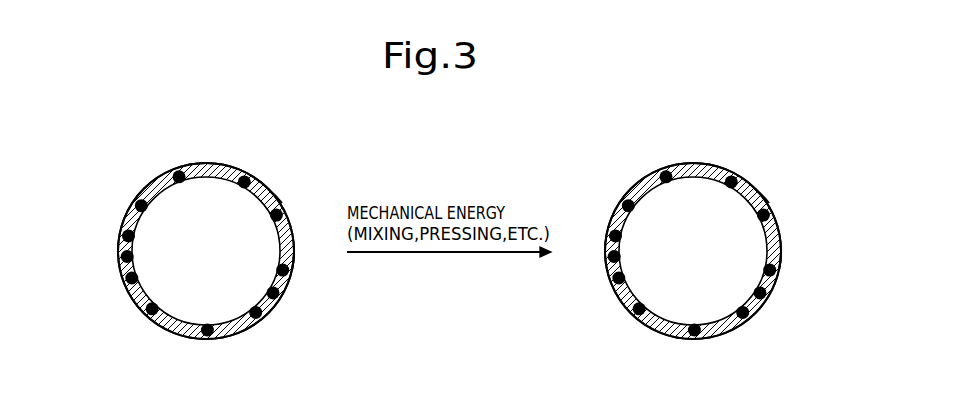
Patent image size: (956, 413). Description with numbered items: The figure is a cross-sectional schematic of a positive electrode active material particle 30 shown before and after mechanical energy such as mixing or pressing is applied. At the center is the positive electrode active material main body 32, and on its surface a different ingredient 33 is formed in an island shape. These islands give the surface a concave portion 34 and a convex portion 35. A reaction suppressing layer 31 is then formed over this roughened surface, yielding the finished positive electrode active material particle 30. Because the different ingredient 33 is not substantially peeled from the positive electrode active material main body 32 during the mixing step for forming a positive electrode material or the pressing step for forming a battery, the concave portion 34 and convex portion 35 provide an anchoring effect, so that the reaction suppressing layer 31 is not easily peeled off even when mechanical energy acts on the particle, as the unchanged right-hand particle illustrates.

The positive electrode active material particle 30 is at (233, 151).
The reaction suppressing layer 31 is at (167, 327).
The positive electrode active material main body 32 is at (146, 188).
The different ingredient 33 is at (263, 318).
The concave portion 34 is at (287, 247).
The convex portion 35 is at (282, 202).